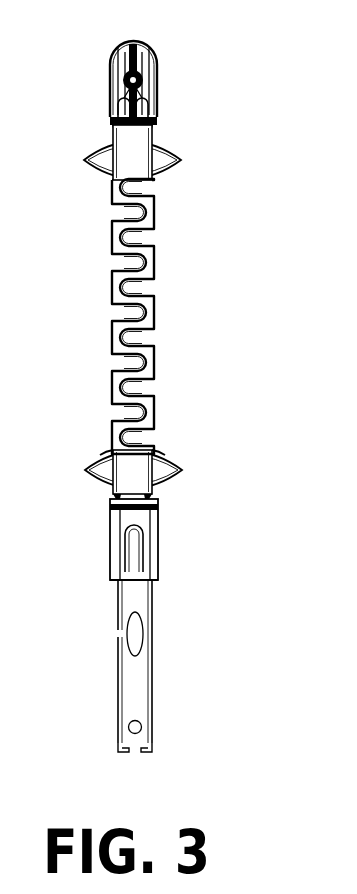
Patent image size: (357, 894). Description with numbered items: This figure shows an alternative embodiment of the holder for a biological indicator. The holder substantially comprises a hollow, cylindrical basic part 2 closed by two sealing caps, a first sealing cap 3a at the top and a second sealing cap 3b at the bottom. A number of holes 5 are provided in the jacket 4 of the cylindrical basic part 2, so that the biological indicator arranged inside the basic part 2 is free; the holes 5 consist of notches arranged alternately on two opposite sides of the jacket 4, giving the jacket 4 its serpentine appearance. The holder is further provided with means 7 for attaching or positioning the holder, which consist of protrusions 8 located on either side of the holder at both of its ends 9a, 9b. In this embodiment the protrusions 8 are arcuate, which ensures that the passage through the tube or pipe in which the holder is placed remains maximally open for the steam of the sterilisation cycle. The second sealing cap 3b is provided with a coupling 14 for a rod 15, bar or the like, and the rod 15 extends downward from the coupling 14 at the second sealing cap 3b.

The basic part 2 is at (201, 50).
The first sealing cap 3a is at (110, 79).
The second sealing cap 3b is at (118, 545).
The jacket 4 is at (112, 238).
The holes 5 is at (142, 287).
The means for attaching or positioning the holder 7 is at (66, 138).
The protrusions 8 is at (105, 452).
The first end 9a is at (192, 160).
The second end 9b is at (193, 470).
The coupling 14 is at (152, 578).
The rod 15 is at (120, 685).